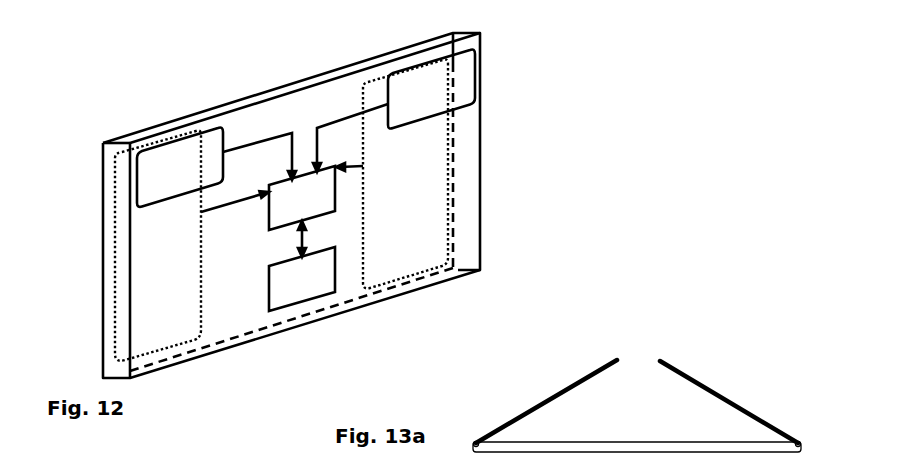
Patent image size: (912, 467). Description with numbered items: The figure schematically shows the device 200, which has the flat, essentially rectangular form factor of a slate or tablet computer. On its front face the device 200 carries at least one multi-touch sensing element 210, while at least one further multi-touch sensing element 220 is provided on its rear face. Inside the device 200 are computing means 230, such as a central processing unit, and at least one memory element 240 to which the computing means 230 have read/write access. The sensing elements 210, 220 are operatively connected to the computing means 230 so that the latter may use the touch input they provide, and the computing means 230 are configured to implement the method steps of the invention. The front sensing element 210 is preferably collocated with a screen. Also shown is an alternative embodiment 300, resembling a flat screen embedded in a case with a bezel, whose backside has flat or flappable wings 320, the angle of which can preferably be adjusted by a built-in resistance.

In FIG. 12, the device 200 is at (212, 62).
In FIG. 12, the multi-touch sensing element 210 is at (153, 182).
In FIG. 12, the further multi-touch sensing element 220 is at (107, 241).
In FIG. 12, the computing means 230 is at (269, 209).
In FIG. 12, the memory element 240 is at (270, 280).
In FIG. 13A, the embodiment 300 is at (677, 387).
In FIG. 13A, the wings 320 is at (760, 417).